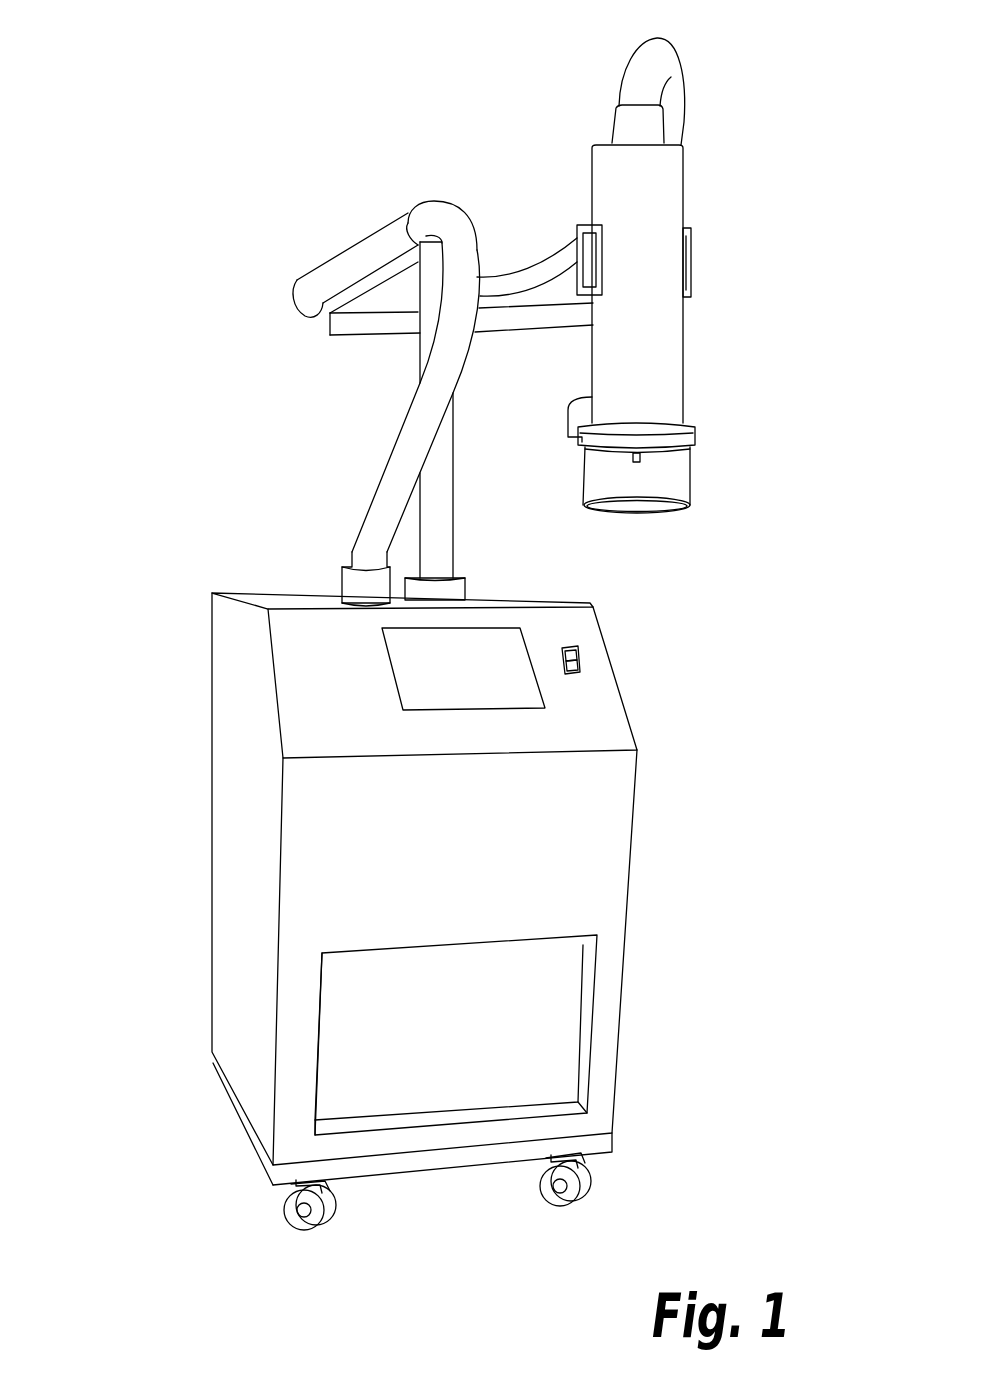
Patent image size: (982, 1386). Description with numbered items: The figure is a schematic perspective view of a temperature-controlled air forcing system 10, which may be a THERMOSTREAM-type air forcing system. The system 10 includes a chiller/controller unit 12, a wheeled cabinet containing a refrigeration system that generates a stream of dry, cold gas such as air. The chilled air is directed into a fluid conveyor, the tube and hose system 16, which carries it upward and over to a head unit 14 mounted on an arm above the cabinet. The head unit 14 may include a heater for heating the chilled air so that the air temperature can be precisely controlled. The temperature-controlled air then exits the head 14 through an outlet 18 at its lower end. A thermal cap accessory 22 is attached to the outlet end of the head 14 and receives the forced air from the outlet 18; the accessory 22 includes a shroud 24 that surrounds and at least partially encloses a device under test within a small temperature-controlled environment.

The temperature-controlled air forcing system 10 is at (240, 126).
The chiller/controller unit 12 is at (623, 695).
The head unit 14 is at (683, 340).
The tube and hose system 16 is at (678, 66).
The outlet 18 is at (695, 422).
The thermal cap accessory 22 is at (697, 437).
The shroud 24 is at (692, 487).